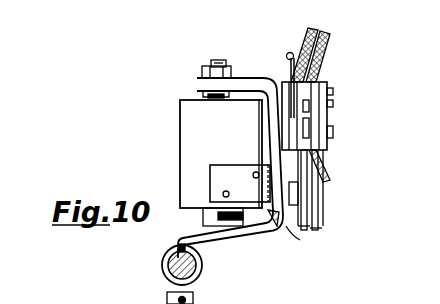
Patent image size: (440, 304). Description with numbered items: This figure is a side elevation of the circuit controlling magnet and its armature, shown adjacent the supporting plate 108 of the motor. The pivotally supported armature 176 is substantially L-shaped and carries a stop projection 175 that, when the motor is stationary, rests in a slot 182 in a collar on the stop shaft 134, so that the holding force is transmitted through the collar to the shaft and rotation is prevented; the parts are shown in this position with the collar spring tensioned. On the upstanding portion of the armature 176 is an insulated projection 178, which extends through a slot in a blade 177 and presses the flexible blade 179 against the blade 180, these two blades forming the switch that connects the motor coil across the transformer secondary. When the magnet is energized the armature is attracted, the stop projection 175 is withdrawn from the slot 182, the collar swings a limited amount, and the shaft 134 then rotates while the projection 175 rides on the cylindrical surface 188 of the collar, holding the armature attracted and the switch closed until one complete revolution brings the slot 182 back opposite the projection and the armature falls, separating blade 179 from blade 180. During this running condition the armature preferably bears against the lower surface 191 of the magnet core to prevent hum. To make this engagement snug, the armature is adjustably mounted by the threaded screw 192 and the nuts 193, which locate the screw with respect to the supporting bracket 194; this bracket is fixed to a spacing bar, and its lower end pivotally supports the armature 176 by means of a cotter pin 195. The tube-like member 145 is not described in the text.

The supporting plate 108 is at (293, 303).
The stop shaft 134 is at (196, 263).
The tube 145 is at (177, 239).
The stop projection 175 is at (249, 234).
The armature 176 is at (284, 216).
The blade 177 is at (312, 218).
The insulated projection 178 is at (298, 192).
The blade 179 is at (313, 208).
The blade 180 is at (326, 181).
The slot 182 is at (175, 250).
The cylindrical surface 188 is at (199, 273).
The lower surface 191 is at (208, 216).
The threaded screw 192 is at (219, 64).
The nuts 193 is at (236, 88).
The supporting bracket 194 is at (284, 64).
The cotter pin 195 is at (296, 246).